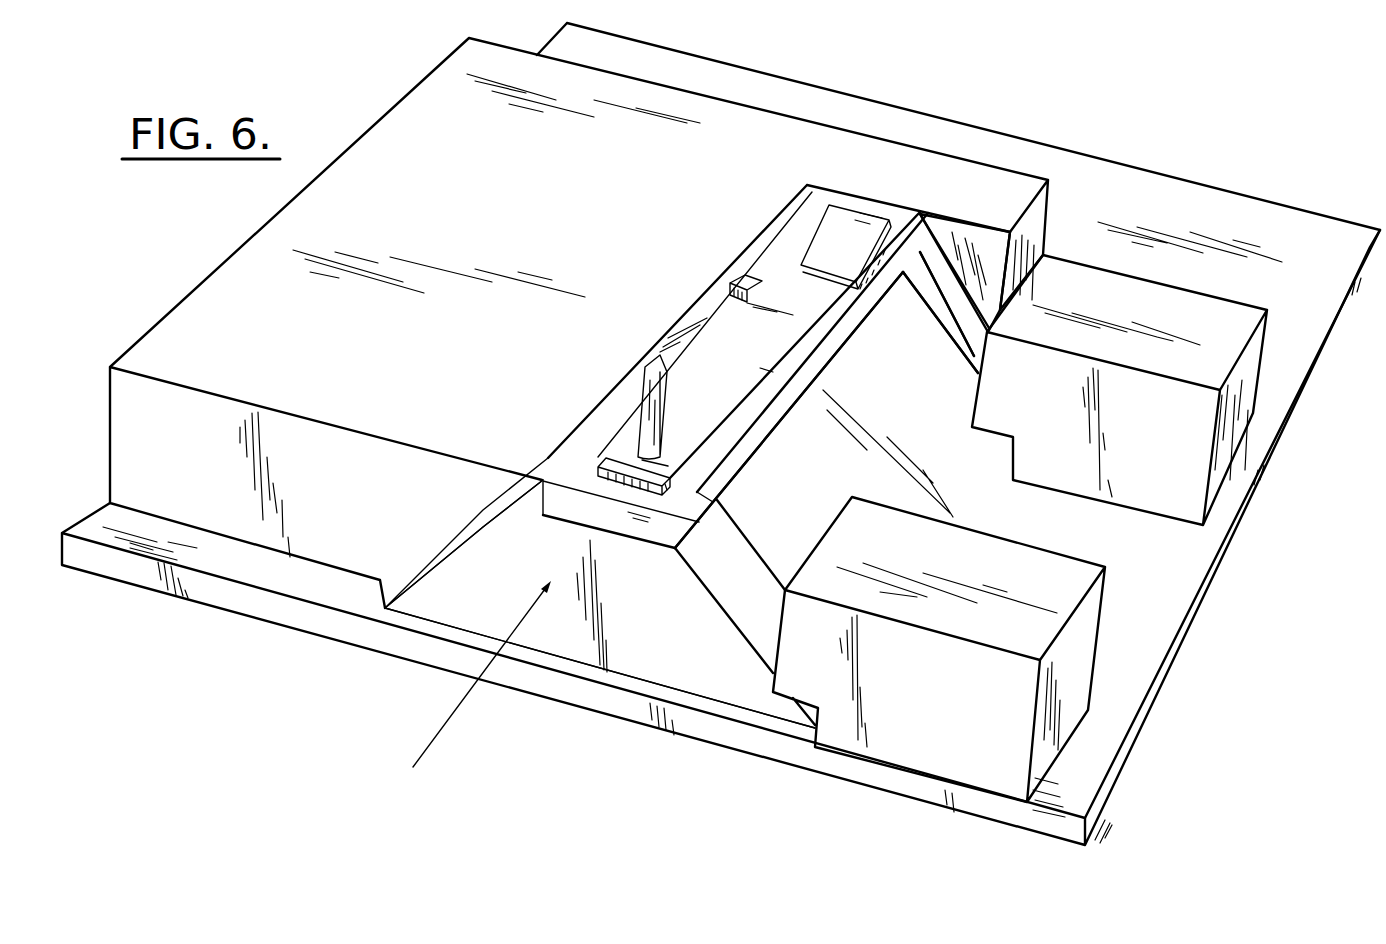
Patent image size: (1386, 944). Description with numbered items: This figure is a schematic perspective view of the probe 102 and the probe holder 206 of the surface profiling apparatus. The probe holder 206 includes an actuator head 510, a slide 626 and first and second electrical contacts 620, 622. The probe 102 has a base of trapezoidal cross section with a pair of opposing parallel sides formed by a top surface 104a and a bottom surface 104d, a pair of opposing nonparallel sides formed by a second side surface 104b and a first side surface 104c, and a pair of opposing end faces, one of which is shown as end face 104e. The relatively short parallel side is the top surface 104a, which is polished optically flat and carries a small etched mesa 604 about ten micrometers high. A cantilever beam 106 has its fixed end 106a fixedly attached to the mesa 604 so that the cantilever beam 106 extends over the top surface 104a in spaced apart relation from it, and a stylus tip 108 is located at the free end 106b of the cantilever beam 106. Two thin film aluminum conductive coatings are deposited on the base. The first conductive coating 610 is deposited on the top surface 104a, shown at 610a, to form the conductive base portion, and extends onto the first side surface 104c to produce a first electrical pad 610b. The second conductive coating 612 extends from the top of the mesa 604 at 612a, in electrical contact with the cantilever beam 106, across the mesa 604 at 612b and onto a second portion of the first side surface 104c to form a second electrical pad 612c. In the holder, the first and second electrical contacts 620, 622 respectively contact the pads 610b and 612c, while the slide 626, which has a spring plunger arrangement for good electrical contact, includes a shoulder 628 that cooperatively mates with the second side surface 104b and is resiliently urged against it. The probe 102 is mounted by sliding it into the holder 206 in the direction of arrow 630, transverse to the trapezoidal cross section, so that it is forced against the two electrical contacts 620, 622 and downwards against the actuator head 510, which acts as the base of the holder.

The probe holder 206 is at (903, 62).
The actuator head 510 is at (282, 588).
The slide 626 is at (532, 218).
The shoulder 628 is at (483, 508).
The top surface 104a is at (675, 533).
The second side surface 104b is at (460, 538).
The first side surface 104c is at (725, 580).
The bottom surface 104d is at (598, 674).
The end face 104e is at (716, 660).
The cantilever beam 106 is at (760, 361).
The fixed end 106a is at (856, 257).
The free end 106b is at (613, 460).
The stylus tip 108 is at (661, 405).
The mesa 604 is at (748, 276).
The first thin film conductive coating 610 is at (738, 511).
The conductive base portion 610a is at (738, 422).
The first electrical pad 610b is at (752, 572).
The second thin film conductive coating 612 is at (910, 308).
The mesa top portion of second coating 612a is at (908, 250).
The mesa-crossing portion of second coating 612b is at (926, 236).
The second electrical pad 612c is at (968, 343).
The first electrical contact 620 is at (946, 705).
The second electrical contact 622 is at (1180, 422).
The probe 102 is at (455, 602).
The arrow 630 is at (438, 735).